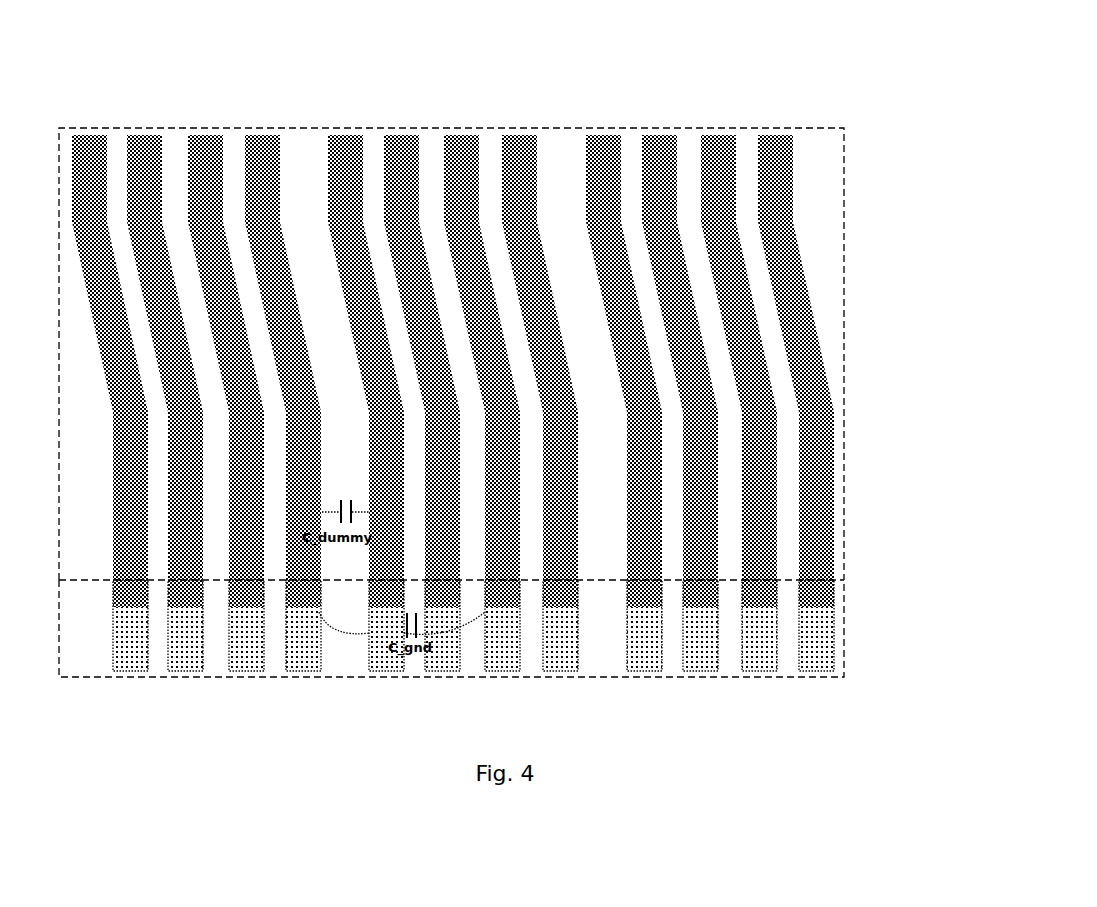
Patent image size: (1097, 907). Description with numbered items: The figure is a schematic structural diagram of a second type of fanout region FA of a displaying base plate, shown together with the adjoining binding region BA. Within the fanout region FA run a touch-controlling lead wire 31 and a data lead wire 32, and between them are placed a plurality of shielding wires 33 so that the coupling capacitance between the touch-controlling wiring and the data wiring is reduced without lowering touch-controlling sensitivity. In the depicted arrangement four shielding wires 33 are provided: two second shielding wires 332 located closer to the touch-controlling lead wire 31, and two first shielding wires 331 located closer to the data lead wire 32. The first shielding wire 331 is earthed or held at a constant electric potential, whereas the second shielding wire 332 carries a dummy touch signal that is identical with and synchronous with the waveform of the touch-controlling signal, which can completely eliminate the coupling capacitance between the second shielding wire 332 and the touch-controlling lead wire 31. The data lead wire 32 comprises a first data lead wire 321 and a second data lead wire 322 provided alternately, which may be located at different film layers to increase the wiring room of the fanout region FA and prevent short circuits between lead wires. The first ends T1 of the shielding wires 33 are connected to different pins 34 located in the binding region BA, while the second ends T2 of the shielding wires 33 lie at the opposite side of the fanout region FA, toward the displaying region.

The touch-controlling lead wire 31 is at (263, 157).
The data lead wire 32 is at (713, 301).
The first data lead wire 321 is at (660, 157).
The second data lead wire 322 is at (771, 322).
The shielding wires 33 is at (456, 301).
The first shielding wire 331 is at (514, 322).
The second shielding wire 332 is at (397, 157).
The pins 34 is at (556, 652).
The first ends of the shielding wires T1 is at (555, 608).
The second ends of the shielding wires T2 is at (512, 135).
The fanout region FA is at (844, 455).
The binding region BA is at (844, 638).